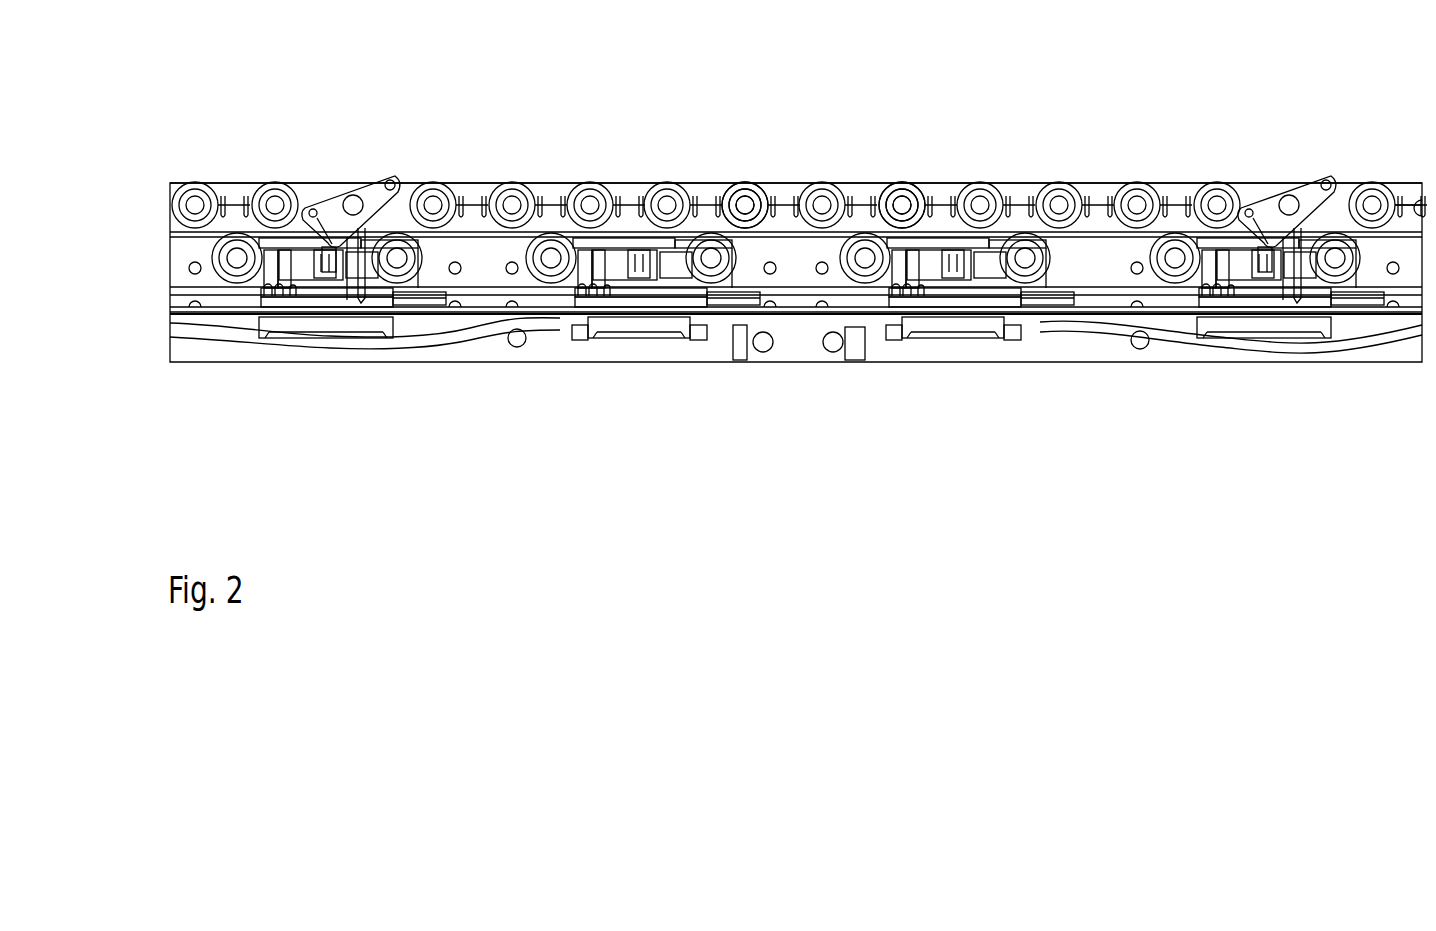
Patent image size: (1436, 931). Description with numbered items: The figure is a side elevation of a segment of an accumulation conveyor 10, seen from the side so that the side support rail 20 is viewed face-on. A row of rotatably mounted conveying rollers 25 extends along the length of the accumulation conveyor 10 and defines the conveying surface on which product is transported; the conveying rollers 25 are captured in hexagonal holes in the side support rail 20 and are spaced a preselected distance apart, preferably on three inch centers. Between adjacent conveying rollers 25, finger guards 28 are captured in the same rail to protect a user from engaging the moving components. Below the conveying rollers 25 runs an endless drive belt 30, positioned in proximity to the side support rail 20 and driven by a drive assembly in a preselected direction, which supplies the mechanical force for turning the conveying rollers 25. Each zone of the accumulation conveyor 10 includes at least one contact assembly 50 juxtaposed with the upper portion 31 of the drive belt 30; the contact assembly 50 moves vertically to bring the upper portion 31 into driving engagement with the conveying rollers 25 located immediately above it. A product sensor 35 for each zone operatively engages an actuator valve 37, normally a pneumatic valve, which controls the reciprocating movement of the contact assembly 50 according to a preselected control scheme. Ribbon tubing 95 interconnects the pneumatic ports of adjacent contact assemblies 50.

The accumulation conveyor 10 is at (152, 127).
The side support rail 20 is at (630, 183).
The conveying rollers 25 is at (265, 183).
The finger guards 28 is at (780, 188).
The drive belt 30 is at (465, 233).
The upper portion of drive belt 31 is at (700, 188).
The product sensor 35 is at (383, 178).
The actuator valve 37 is at (327, 247).
The contact assembly 50 is at (297, 270).
The ribbon tubing 95 is at (423, 342).